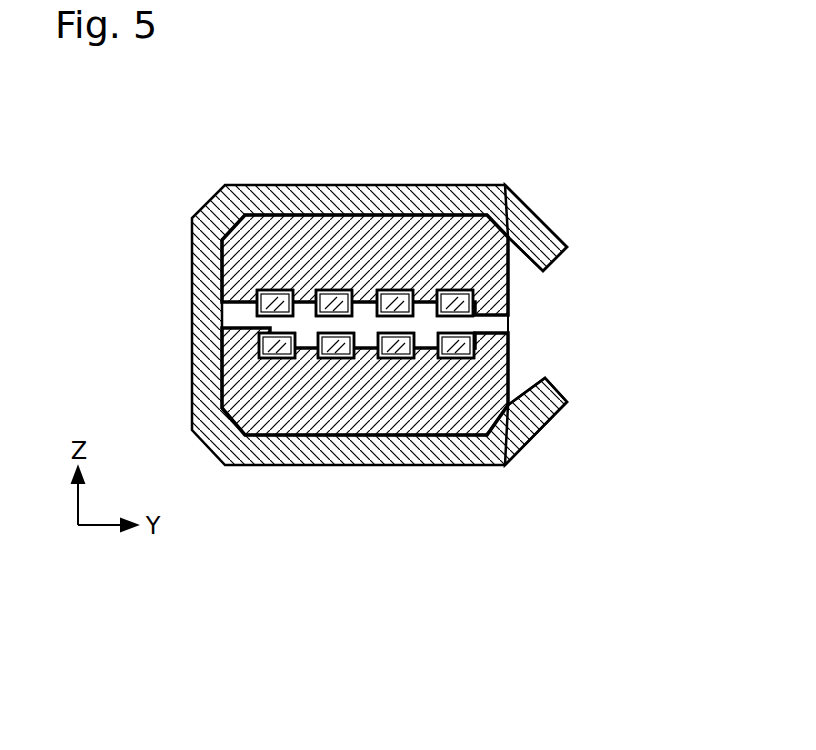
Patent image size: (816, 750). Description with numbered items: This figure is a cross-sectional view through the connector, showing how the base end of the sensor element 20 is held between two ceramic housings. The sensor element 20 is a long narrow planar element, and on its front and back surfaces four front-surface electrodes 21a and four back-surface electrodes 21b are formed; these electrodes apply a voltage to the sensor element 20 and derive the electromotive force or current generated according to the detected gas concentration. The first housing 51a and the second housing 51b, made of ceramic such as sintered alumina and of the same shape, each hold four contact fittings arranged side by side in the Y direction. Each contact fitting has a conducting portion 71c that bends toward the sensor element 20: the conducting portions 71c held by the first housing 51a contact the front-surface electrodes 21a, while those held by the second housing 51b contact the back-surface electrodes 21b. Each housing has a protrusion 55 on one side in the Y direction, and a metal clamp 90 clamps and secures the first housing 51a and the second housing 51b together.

The metal clamp 90 is at (500, 190).
The first housing 51a is at (495, 212).
The second housing 51b is at (500, 418).
The protrusion 55 is at (478, 322).
The sensor element 20 is at (462, 328).
The front-surface electrodes 21a is at (327, 290).
The back-surface electrodes 21b is at (263, 337).
The conducting portion 71c is at (280, 292).